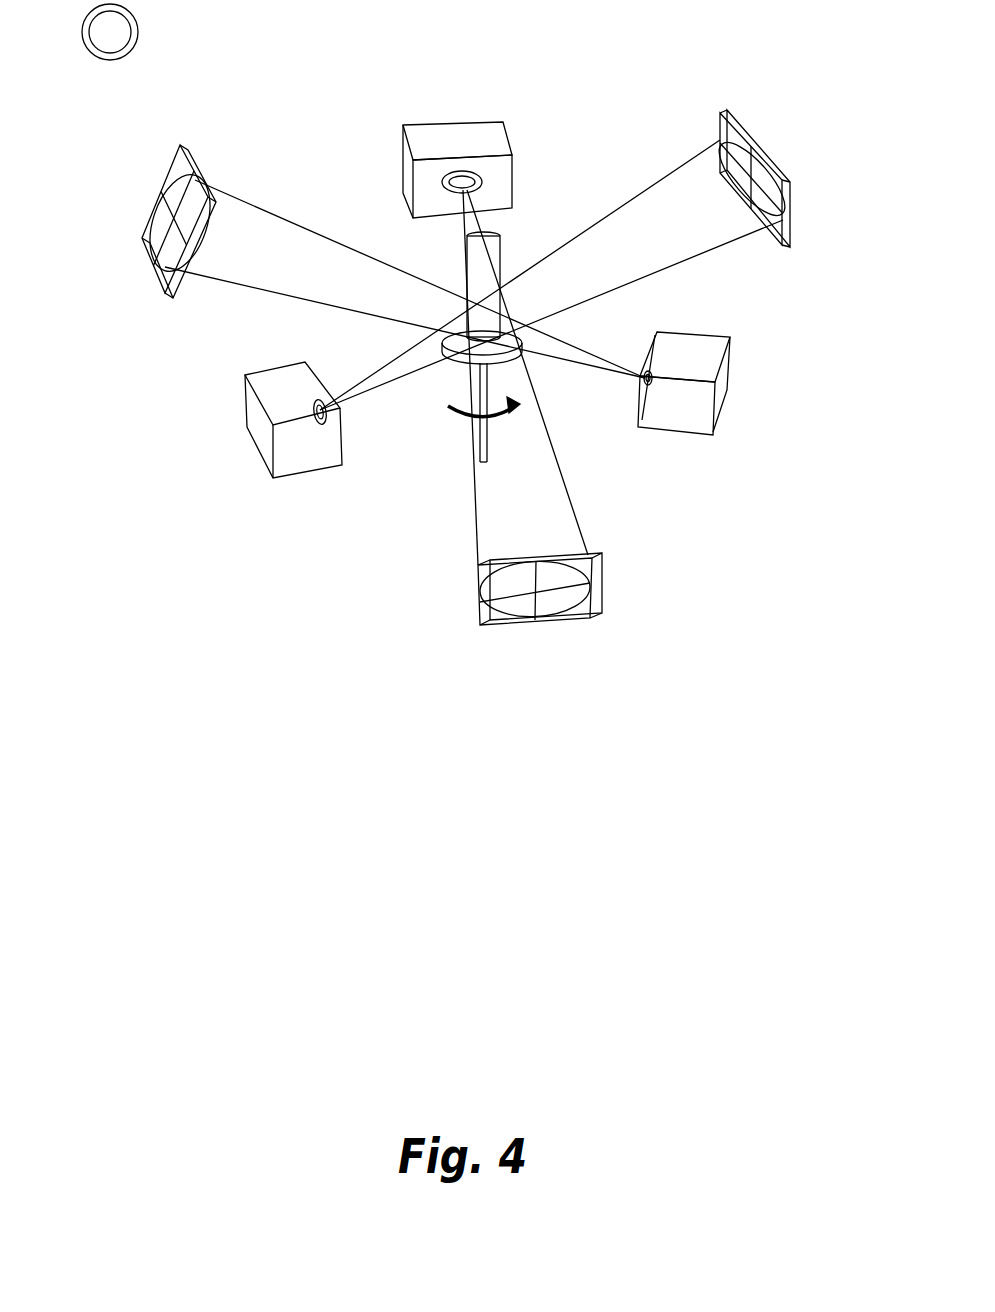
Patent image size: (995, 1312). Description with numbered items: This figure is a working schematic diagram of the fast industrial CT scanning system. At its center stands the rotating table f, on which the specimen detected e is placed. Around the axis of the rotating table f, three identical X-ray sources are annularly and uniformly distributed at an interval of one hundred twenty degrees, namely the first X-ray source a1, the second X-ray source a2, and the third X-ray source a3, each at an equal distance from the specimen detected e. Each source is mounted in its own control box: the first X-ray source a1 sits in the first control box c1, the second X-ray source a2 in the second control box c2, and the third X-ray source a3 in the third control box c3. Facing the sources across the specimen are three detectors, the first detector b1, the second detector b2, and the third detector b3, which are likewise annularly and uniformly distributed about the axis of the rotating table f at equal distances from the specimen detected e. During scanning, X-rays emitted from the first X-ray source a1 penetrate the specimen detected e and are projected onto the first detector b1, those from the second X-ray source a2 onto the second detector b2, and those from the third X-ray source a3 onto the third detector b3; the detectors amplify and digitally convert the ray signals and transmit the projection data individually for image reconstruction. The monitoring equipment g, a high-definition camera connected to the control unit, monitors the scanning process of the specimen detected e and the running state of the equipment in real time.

The monitoring equipment g is at (152, 39).
The first X-ray source a1 is at (509, 135).
The second X-ray source a2 is at (738, 336).
The third X-ray source a3 is at (232, 378).
The first detector b1 is at (605, 570).
The second detector b2 is at (117, 207).
The third detector b3 is at (809, 164).
The first control box c1 is at (412, 143).
The second control box c2 is at (755, 406).
The third control box c3 is at (230, 448).
The specimen detected e is at (526, 266).
The rotating table f is at (458, 342).